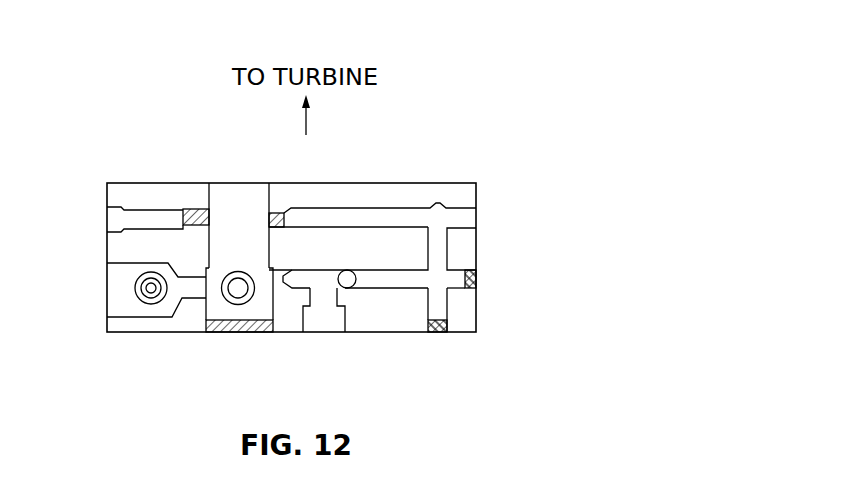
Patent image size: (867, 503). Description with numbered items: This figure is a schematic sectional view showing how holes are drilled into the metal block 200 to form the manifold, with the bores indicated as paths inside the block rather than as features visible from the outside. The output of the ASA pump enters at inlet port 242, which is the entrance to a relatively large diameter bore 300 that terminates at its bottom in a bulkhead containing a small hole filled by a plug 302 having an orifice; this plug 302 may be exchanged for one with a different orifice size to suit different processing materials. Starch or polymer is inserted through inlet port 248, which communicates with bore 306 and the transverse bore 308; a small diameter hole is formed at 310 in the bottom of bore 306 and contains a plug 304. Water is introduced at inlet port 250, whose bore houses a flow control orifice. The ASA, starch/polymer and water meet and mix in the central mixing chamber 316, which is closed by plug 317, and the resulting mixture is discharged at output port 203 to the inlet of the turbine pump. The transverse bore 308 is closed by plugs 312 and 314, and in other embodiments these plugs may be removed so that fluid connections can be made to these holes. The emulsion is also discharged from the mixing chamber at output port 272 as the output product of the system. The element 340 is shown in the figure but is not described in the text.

The manifold (metal block) 200 is at (156, 46).
The output port 203 is at (243, 193).
The inlet port 242 is at (107, 218).
The inlet port 248 is at (472, 220).
The inlet port 250 is at (325, 325).
The output port 272 is at (108, 268).
The large diameter bore 300 is at (136, 214).
The plug 302 is at (196, 213).
The plug 304 is at (284, 213).
The bore 306 is at (357, 213).
The transverse bore 308 is at (438, 256).
The bore (small diameter hole) 310 is at (408, 282).
The plug 312 is at (438, 333).
The plug 314 is at (476, 280).
The mixing chamber 316 is at (262, 251).
The plug 317 is at (237, 333).
The valve element 340 is at (135, 290).